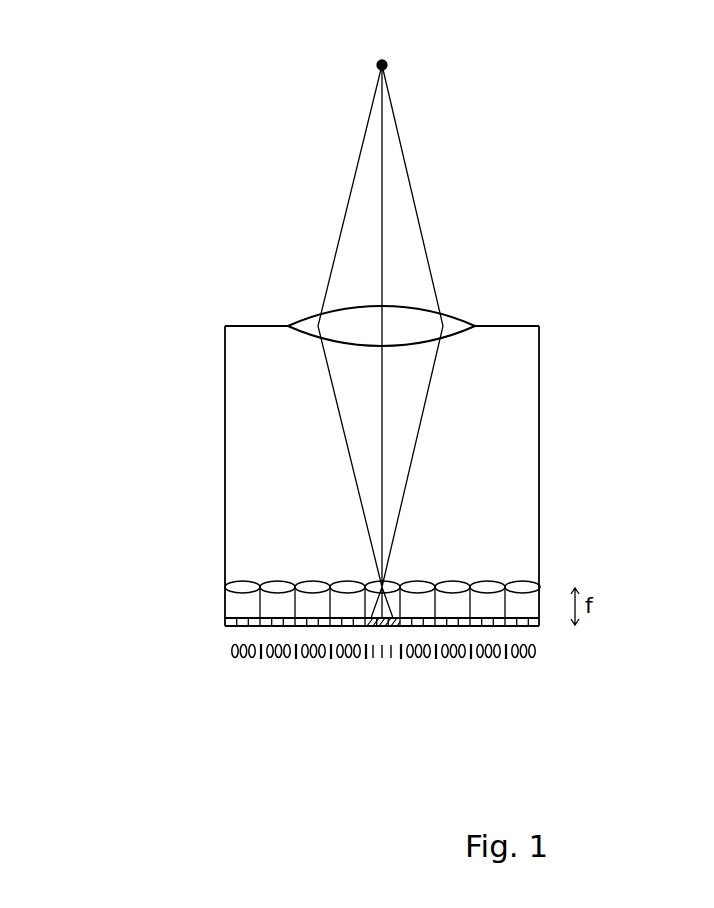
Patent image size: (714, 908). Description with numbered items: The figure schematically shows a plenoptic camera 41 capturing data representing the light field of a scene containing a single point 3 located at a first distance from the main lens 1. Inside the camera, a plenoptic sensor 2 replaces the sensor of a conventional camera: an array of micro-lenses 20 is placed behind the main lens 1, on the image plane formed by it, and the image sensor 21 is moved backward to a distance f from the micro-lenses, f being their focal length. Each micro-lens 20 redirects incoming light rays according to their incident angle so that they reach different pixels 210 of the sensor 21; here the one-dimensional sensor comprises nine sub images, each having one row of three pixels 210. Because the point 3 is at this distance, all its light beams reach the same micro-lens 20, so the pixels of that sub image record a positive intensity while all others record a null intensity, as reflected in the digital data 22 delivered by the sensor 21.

The main lens 1 is at (475, 325).
The plenoptic sensor 2 is at (350, 628).
The point 3 is at (395, 57).
The micro-lens 20 is at (226, 584).
The image sensor 21 is at (392, 645).
The digital data 22 is at (216, 669).
The plenoptic camera 41 is at (135, 433).
The pixel 210 is at (539, 626).